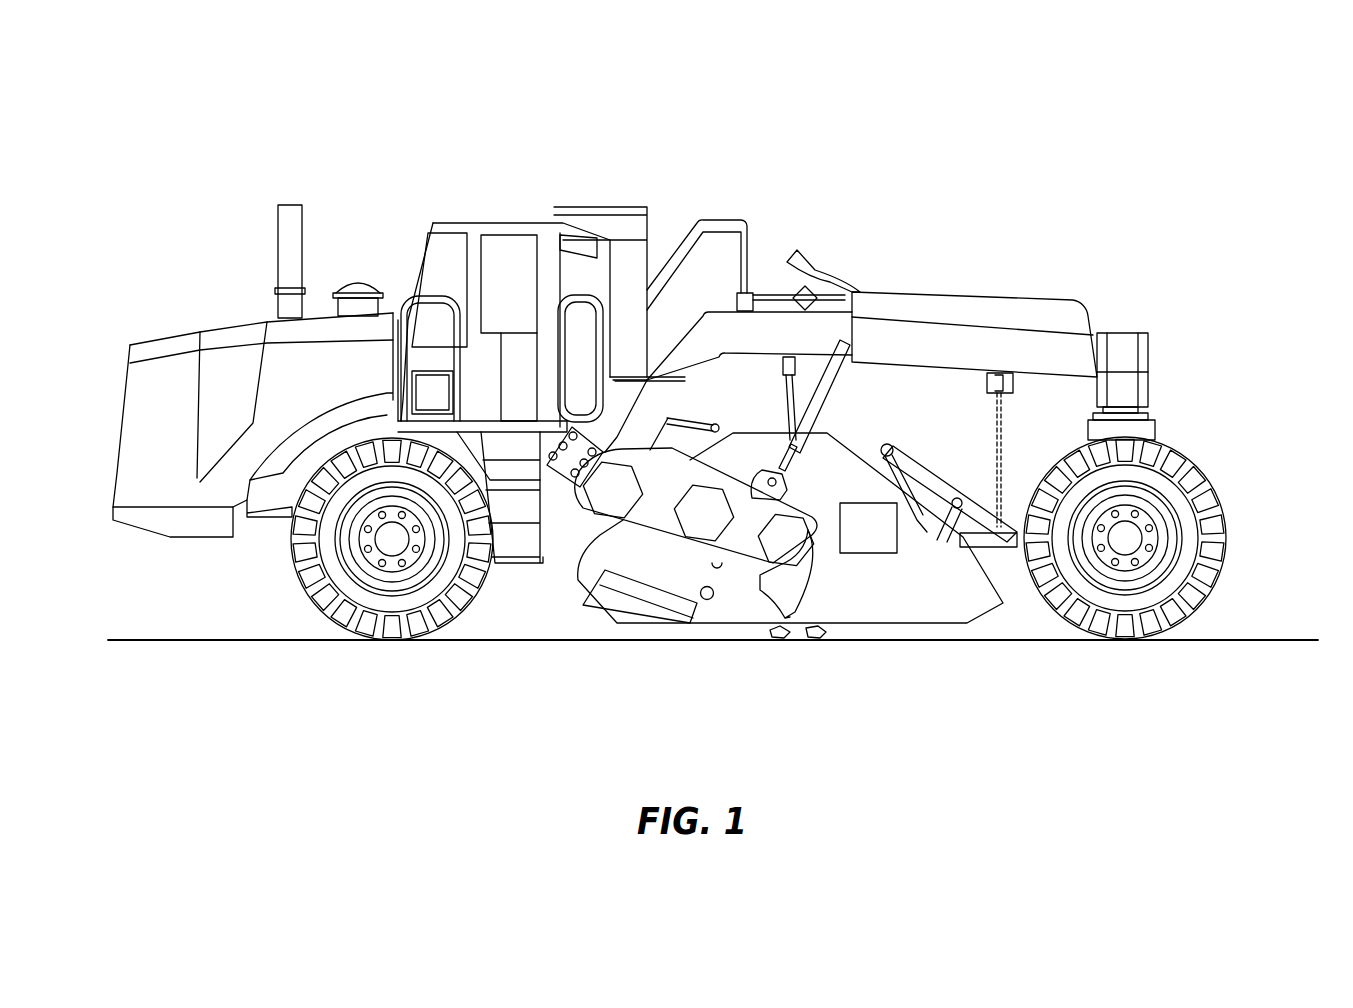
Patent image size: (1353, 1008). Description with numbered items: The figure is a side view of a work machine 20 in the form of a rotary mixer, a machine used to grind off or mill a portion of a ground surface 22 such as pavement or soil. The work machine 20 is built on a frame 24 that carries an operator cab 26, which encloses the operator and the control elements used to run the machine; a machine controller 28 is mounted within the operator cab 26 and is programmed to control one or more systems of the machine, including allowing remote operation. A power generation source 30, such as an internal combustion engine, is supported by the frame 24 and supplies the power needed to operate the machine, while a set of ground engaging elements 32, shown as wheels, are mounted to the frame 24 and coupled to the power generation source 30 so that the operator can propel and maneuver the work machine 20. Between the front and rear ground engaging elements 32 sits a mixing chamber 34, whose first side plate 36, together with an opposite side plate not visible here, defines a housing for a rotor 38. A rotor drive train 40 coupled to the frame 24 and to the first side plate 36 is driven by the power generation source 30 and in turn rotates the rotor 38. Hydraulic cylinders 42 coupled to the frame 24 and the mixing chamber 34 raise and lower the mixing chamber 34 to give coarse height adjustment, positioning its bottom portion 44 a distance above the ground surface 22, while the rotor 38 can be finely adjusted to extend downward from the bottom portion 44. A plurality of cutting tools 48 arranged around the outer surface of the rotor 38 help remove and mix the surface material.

The work machine 20 is at (220, 135).
The ground surface 22 is at (214, 641).
The frame 24 is at (773, 327).
The operator cab 26 is at (511, 230).
The machine controller 28 is at (432, 392).
The power generation source 30 is at (138, 386).
The ground engaging elements 32 is at (366, 622).
The mixing chamber 34 is at (754, 582).
The first side plate 36 is at (897, 603).
The rotor 38 is at (783, 636).
The rotor drive train 40 is at (625, 520).
The hydraulic cylinders 42 is at (832, 357).
The bottom portion 44 is at (957, 630).
The cutting tools 48 is at (818, 636).